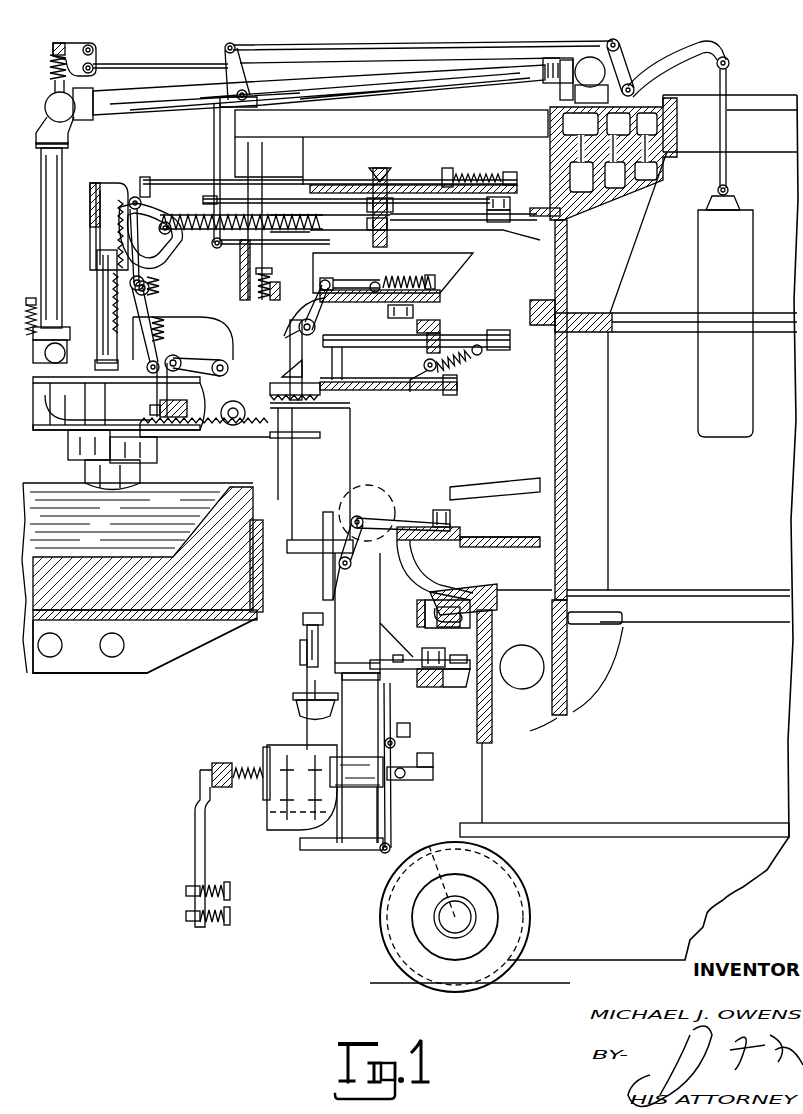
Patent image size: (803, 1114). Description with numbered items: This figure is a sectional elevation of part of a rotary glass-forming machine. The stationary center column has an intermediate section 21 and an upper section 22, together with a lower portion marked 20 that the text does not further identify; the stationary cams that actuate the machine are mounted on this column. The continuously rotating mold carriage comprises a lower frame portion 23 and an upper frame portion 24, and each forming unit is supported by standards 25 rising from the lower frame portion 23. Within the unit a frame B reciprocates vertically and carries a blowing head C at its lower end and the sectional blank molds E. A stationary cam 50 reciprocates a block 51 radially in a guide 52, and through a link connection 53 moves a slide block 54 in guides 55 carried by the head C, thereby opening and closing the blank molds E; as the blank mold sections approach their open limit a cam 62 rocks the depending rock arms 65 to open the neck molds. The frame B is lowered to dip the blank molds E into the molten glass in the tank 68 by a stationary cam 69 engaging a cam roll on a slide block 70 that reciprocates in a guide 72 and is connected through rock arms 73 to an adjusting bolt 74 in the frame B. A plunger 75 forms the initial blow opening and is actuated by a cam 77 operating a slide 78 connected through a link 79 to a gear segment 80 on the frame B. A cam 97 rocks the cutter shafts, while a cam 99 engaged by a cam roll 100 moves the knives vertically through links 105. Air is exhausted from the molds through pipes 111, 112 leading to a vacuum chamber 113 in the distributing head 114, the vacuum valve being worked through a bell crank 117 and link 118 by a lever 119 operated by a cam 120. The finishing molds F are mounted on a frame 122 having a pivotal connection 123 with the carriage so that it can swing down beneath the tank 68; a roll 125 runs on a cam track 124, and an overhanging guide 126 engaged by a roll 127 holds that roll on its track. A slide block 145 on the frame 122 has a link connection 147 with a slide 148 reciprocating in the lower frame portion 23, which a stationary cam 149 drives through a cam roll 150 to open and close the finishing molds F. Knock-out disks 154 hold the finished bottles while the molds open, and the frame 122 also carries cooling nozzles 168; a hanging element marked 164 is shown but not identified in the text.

The base frame 20 is at (566, 663).
The intermediate section 21 is at (562, 411).
The upper section 22 is at (567, 270).
The lower frame portion 23 is at (492, 551).
The upper frame portion 24 is at (450, 132).
The standards 25 is at (340, 443).
The stationary cam 50 is at (420, 323).
The block 51 is at (491, 336).
The guide 52 is at (393, 349).
The link connection 53 is at (460, 357).
The slide block 54 is at (388, 389).
The guides 55 is at (450, 391).
The cam 62 is at (297, 357).
The rock arms 65 is at (178, 406).
The tank 68 is at (230, 486).
The stationary cam 69 is at (387, 313).
The slide block 70 is at (352, 290).
The guide 72 is at (445, 300).
The rock arms 73 is at (297, 300).
The adjusting bolt 74 is at (264, 270).
The plunger 75 is at (100, 333).
The cam 77 is at (367, 230).
The slide 78 is at (381, 258).
The link 79 is at (270, 222).
The gear segment 80 is at (109, 194).
The cam 97 is at (362, 200).
The cam 99 is at (512, 206).
The cam roll 100 is at (489, 203).
The links 105 is at (183, 182).
The vertical pipe 111 is at (50, 164).
The pipe 112 is at (160, 87).
The vacuum chamber 113 is at (577, 126).
The distributing head 114 is at (665, 93).
The bell crank 117 is at (77, 45).
The link 118 is at (190, 63).
The lever 119 is at (548, 66).
The cam 120 is at (514, 180).
The frame 122 is at (347, 684).
The pivotal connection 123 is at (356, 498).
The cam track 124 is at (445, 690).
The roll 125 is at (437, 676).
The overhanging guide 126 is at (426, 662).
The roll 127 is at (450, 630).
The slide block 145 is at (327, 606).
The link connection 147 is at (354, 566).
The slide 148 is at (430, 546).
The stationary cam 149 is at (448, 528).
The cam roll 150 is at (436, 511).
The knock-out disks 154 is at (229, 917).
The weight 164 is at (698, 251).
The cooling nozzles 168 is at (300, 711).
The frame B is at (181, 346).
The blowing head C is at (83, 407).
The sectional blank molds E is at (130, 473).
The finishing molds F is at (287, 818).